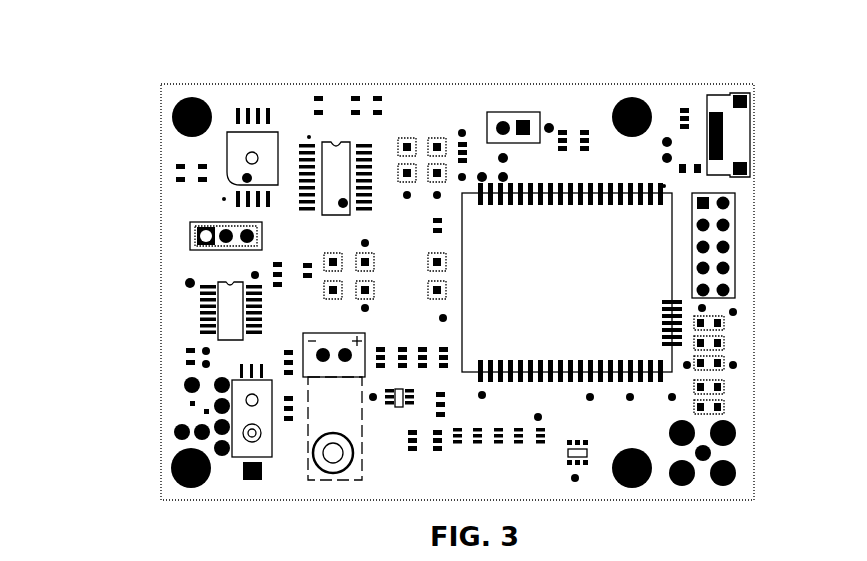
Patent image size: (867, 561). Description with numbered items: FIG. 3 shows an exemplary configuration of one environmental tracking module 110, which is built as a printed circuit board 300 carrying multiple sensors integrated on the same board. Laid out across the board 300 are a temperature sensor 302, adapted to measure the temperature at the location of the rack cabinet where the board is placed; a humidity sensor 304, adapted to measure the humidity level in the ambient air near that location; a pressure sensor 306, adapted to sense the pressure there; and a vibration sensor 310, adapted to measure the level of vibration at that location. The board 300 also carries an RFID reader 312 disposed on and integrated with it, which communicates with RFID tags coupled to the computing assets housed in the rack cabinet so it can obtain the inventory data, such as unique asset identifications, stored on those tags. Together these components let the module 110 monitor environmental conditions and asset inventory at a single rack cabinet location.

The environmental tracking module 110 is at (143, 106).
The printed circuit board 300 is at (158, 323).
The temperature sensor 302 is at (346, 178).
The humidity sensor 304 is at (240, 432).
The pressure sensor 306 is at (230, 160).
The vibration sensor 310 is at (330, 456).
The RFID reader 312 is at (650, 260).